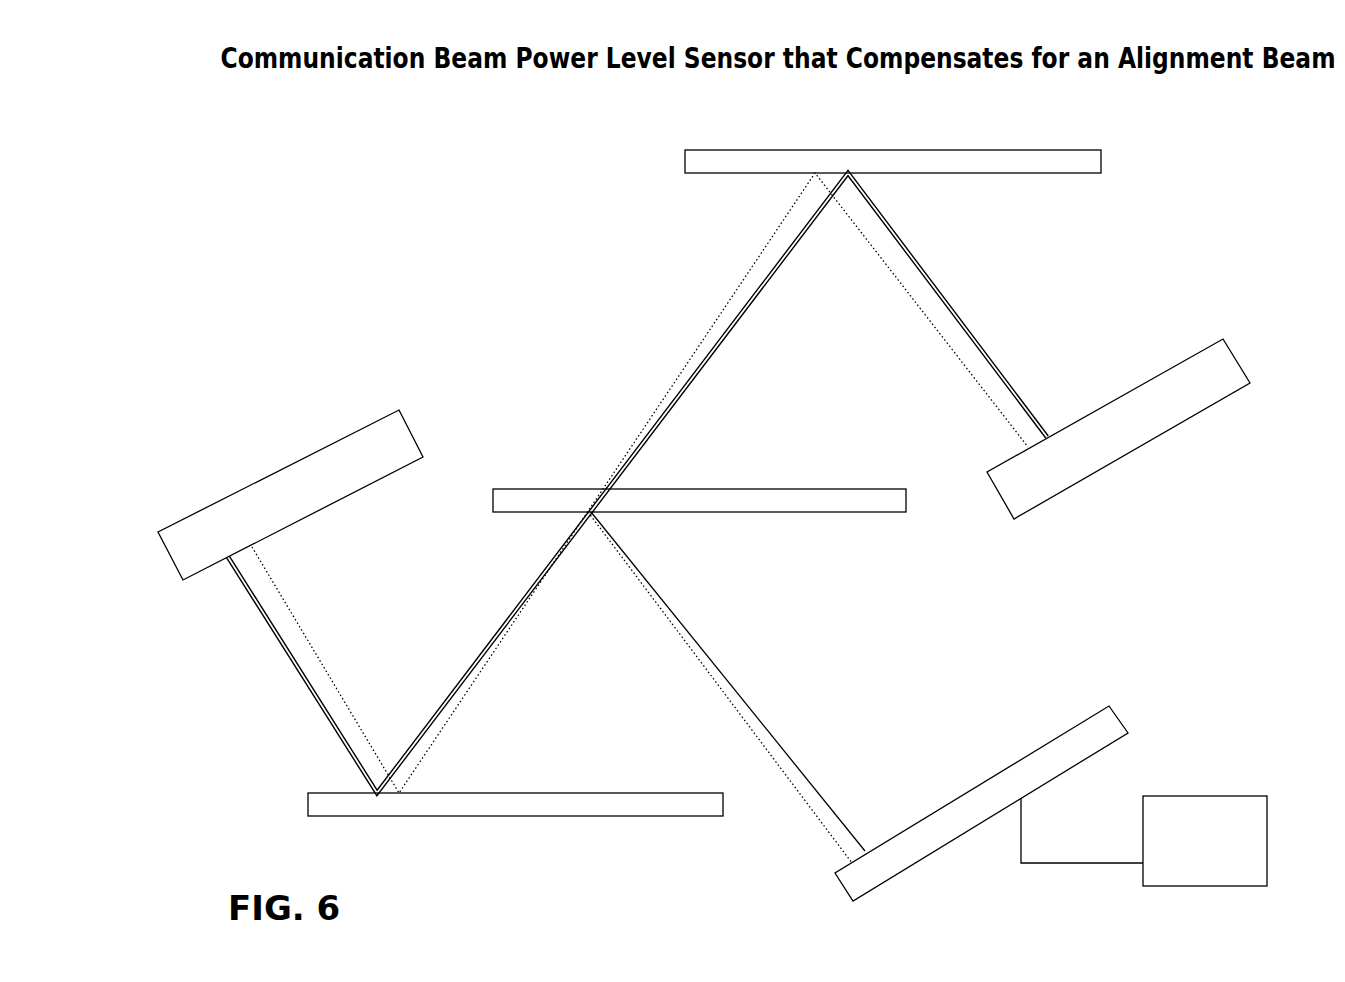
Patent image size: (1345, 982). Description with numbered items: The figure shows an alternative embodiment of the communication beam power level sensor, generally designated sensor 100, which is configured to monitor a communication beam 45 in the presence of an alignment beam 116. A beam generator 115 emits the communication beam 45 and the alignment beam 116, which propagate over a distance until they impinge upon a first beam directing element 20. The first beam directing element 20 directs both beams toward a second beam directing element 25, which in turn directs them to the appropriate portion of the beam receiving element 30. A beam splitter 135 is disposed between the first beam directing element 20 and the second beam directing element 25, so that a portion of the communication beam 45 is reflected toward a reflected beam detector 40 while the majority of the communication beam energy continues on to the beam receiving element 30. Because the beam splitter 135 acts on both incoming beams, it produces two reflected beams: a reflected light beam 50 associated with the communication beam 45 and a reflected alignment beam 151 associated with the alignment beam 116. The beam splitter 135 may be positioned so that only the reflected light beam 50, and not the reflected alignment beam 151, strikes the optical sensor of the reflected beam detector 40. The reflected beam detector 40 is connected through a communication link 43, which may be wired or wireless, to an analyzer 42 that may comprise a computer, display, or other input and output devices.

The sensor 100 is at (357, 267).
The first beam directing element 20 is at (545, 816).
The second beam directing element 25 is at (1095, 150).
The beam receiving element 30 is at (1207, 408).
The reflected beam detector 40 is at (1120, 722).
The analyzer 42 is at (1183, 796).
The communication link 43 is at (1107, 863).
The communication beam 45 is at (947, 287).
The reflected light beam 50 is at (688, 625).
The beam generator 115 is at (423, 450).
The alignment beam 116 is at (977, 379).
The beam splitter 135 is at (848, 489).
The reflected alignment beam 151 is at (688, 648).